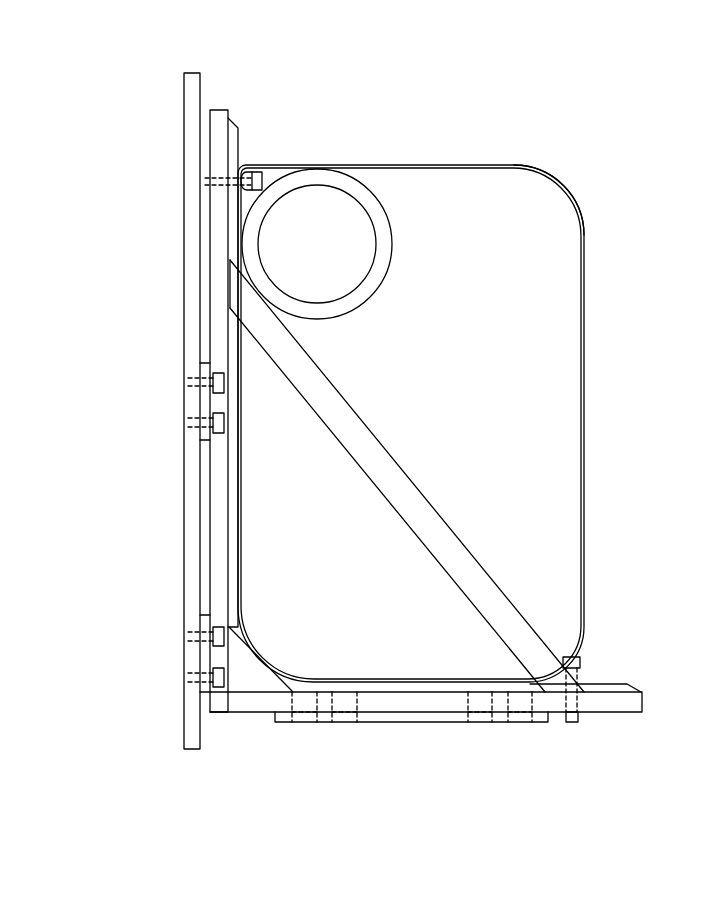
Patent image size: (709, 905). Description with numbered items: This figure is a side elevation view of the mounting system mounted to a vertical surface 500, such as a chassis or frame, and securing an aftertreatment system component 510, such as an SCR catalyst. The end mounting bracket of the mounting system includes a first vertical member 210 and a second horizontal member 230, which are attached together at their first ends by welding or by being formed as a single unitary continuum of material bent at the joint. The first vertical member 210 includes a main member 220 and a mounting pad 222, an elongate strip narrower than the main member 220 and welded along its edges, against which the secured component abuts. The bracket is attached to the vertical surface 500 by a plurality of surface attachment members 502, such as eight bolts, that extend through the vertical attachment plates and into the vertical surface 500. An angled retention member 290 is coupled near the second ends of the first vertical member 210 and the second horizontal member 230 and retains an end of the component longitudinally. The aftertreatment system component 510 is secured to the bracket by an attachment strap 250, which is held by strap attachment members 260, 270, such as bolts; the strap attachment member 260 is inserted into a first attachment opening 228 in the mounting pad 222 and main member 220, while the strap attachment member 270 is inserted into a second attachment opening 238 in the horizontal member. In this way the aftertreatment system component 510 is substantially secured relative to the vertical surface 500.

The vertical surface 500 is at (178, 302).
The first vertical member 210 is at (173, 467).
The main member 220 is at (228, 108).
The mounting pad 222 is at (238, 147).
The first attachment opening 228 is at (205, 178).
The second horizontal member 230 is at (408, 640).
The second attachment opening 238 is at (578, 705).
The attachment strap 250 is at (587, 340).
The strap attachment member 260 is at (263, 188).
The strap attachment member 270 is at (586, 663).
The angled retention member 290 is at (432, 450).
The surface attachment members 502 is at (200, 377).
The aftertreatment system component 510 is at (598, 223).